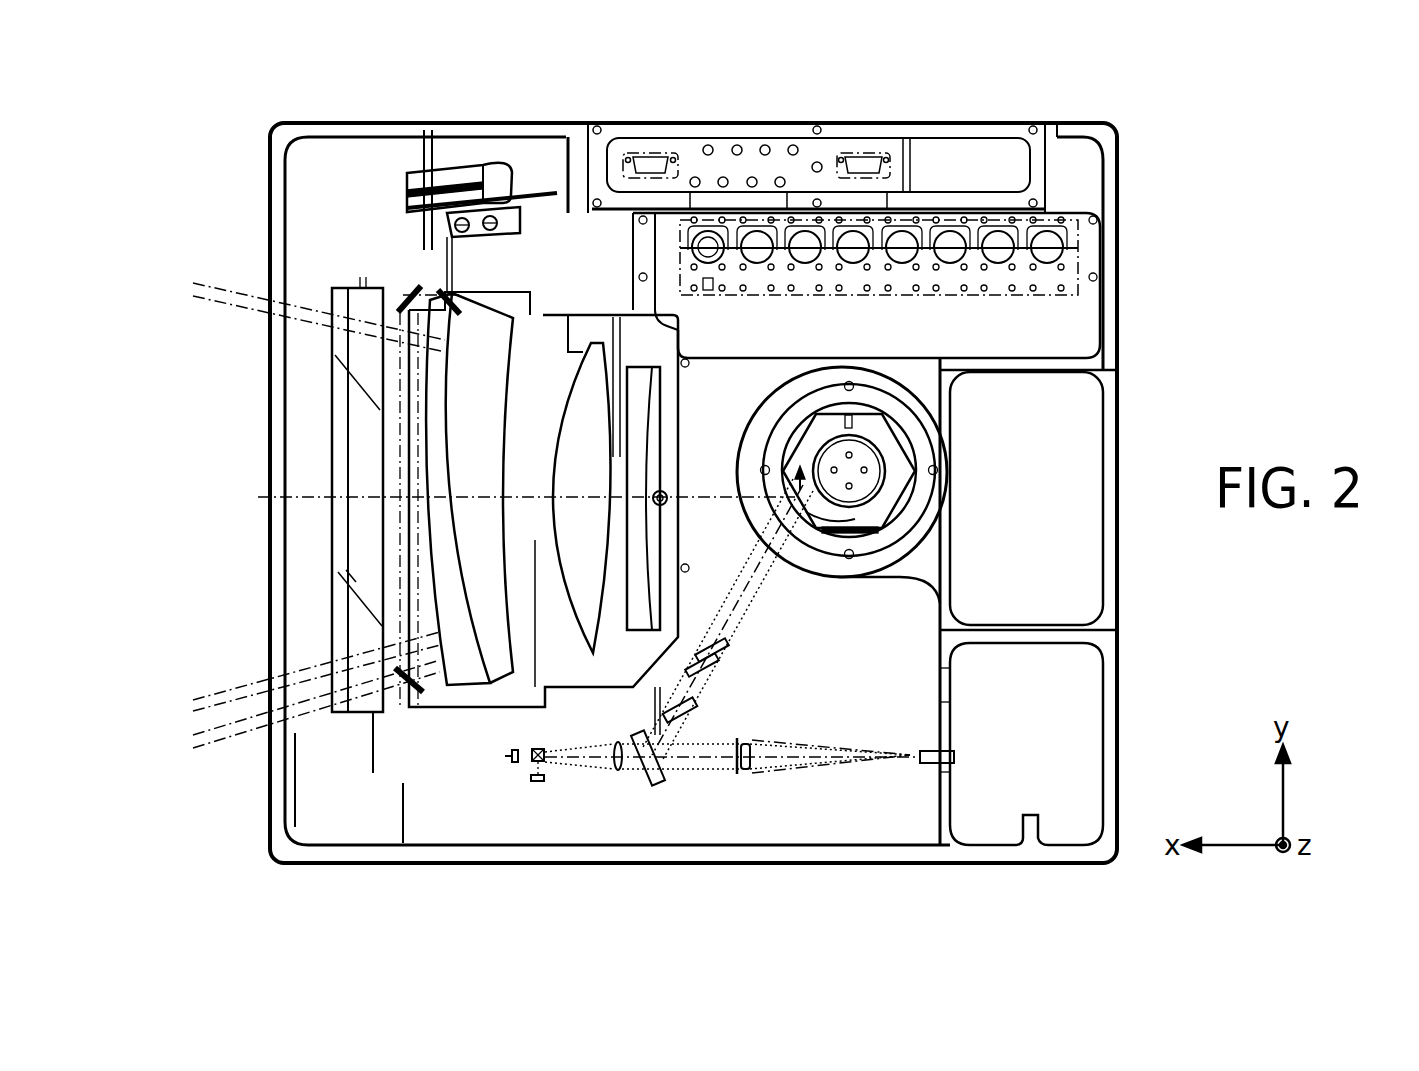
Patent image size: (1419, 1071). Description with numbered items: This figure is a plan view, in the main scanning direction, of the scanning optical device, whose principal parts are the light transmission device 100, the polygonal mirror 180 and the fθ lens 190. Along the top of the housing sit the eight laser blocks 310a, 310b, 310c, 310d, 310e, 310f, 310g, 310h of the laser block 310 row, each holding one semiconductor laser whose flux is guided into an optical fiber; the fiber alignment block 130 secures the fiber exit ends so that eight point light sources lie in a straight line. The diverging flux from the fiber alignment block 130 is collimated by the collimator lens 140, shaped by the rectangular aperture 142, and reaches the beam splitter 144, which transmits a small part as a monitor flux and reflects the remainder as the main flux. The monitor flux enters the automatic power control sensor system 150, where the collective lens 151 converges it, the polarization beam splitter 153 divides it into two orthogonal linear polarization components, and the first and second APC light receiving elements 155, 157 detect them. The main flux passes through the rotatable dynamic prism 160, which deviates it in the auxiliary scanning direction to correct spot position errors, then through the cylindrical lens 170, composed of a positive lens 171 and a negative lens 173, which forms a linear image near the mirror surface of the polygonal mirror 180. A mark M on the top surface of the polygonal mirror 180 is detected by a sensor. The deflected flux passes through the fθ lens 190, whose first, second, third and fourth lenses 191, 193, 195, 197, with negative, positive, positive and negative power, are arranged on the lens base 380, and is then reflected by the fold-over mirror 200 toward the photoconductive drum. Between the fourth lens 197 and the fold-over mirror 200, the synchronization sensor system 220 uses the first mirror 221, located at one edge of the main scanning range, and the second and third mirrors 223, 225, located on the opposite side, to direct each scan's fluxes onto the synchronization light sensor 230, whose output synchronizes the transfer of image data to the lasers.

The light transmission device 100 is at (1158, 262).
The fiber alignment block 130 is at (943, 753).
The collimator lens 140 is at (750, 768).
The aperture 142 is at (740, 773).
The beam splitter 144 is at (660, 776).
The automatic power control (APC) sensor system 150 is at (671, 820).
The collective lens 151 is at (622, 784).
The polarization beam splitter 153 is at (535, 781).
The first APC light receiving element 155 is at (507, 757).
The second APC light receiving element 157 is at (543, 761).
The dynamic prism 160 is at (695, 712).
The cylindrical lens 170 is at (757, 620).
The lens 171 is at (718, 672).
The lens 173 is at (727, 650).
The polygonal mirror 180 is at (874, 480).
The mark M is at (852, 416).
The fθ lens 190 is at (543, 444).
The first lens 191 is at (622, 439).
The second lens 193 is at (577, 340).
The third lens 195 is at (505, 320).
The fourth lens 197 is at (467, 312).
The fold-over mirror 200 is at (367, 713).
The synchronization sensor system 220 is at (468, 455).
The first mirror 221 is at (317, 630).
The second mirror 223 is at (410, 297).
The third mirror 225 is at (458, 318).
The synchronization light sensor 230 is at (418, 212).
The laser block 310 is at (907, 269).
The laser block 310a is at (724, 258).
The laser block 310b is at (760, 268).
The laser block 310c is at (798, 262).
The laser block 310d is at (855, 268).
The laser block 310e is at (897, 262).
The laser block 310f is at (950, 268).
The laser block 310g is at (997, 262).
The laser block 310h is at (1047, 268).
The lens base 380 is at (717, 431).